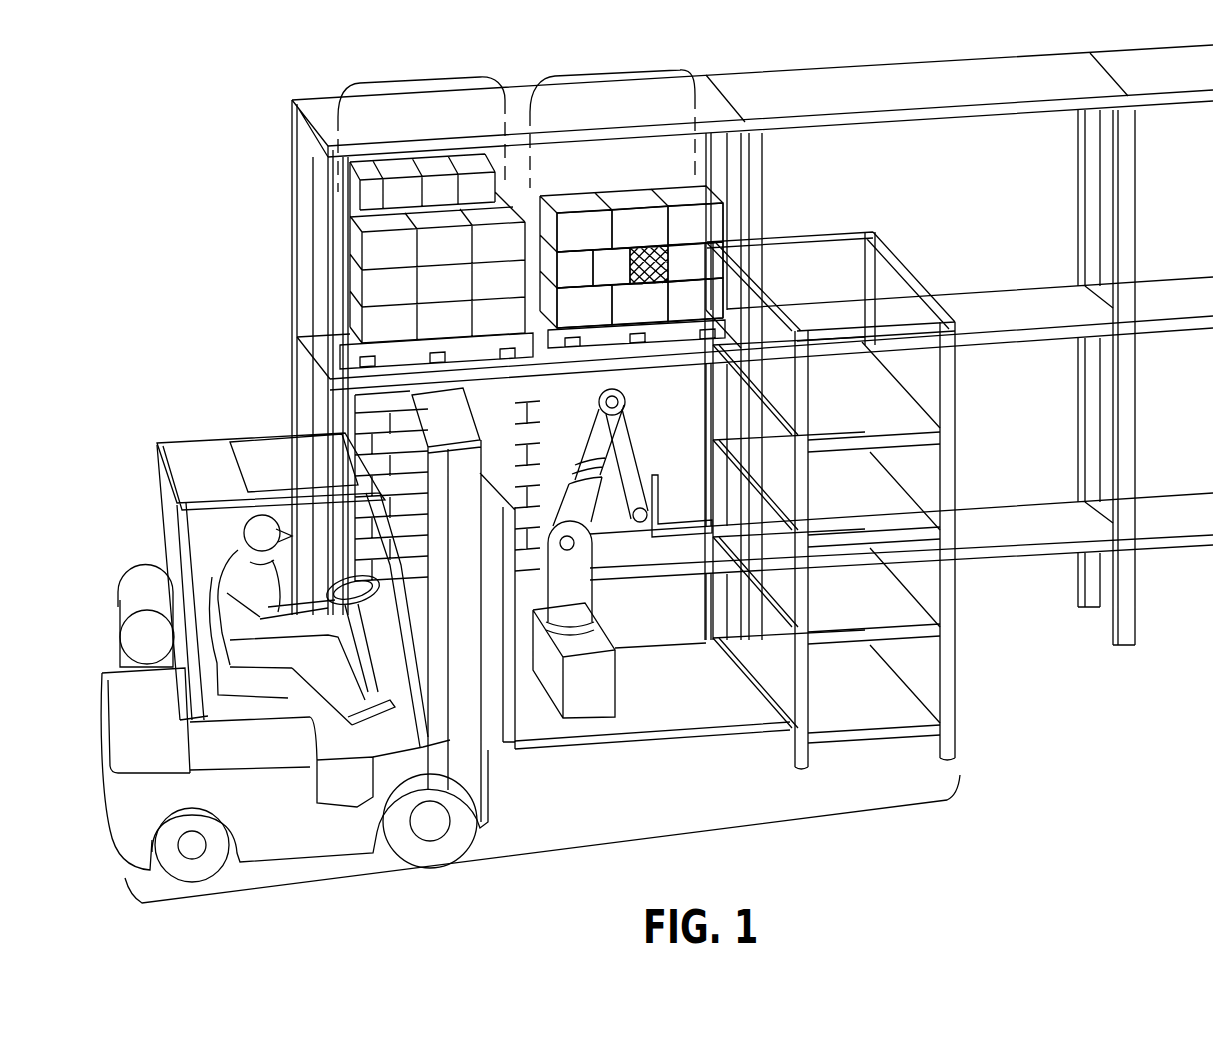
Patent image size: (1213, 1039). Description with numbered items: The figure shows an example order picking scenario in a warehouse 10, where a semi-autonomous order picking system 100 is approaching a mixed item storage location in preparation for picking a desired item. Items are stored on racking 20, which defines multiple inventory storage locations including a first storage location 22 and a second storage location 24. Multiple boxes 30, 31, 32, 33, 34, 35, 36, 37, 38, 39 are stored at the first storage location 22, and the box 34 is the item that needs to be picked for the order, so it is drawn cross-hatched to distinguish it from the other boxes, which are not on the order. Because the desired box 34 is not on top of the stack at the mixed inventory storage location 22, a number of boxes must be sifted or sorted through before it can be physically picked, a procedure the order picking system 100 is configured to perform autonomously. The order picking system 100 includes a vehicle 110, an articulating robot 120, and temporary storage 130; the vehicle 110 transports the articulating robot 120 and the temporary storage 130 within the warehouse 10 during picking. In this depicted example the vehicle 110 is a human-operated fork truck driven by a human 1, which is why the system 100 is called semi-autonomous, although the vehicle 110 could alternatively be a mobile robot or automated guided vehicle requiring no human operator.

The human 1 is at (247, 633).
The warehouse 10 is at (240, 105).
The racking 20 is at (292, 250).
The first storage location 22 is at (610, 68).
The second storage location 24 is at (420, 80).
The box 30 is at (706, 241).
The box 31 is at (638, 244).
The box 32 is at (596, 246).
The box 33 is at (705, 278).
The box 34 is at (647, 250).
The box 35 is at (623, 281).
The box 36 is at (585, 282).
The box 37 is at (705, 315).
The box 38 is at (653, 317).
The box 39 is at (592, 319).
The semi-autonomous order picking system 100 is at (545, 855).
The vehicle 110 is at (298, 814).
The articulating robot 120 is at (600, 603).
The temporary storage 130 is at (955, 595).